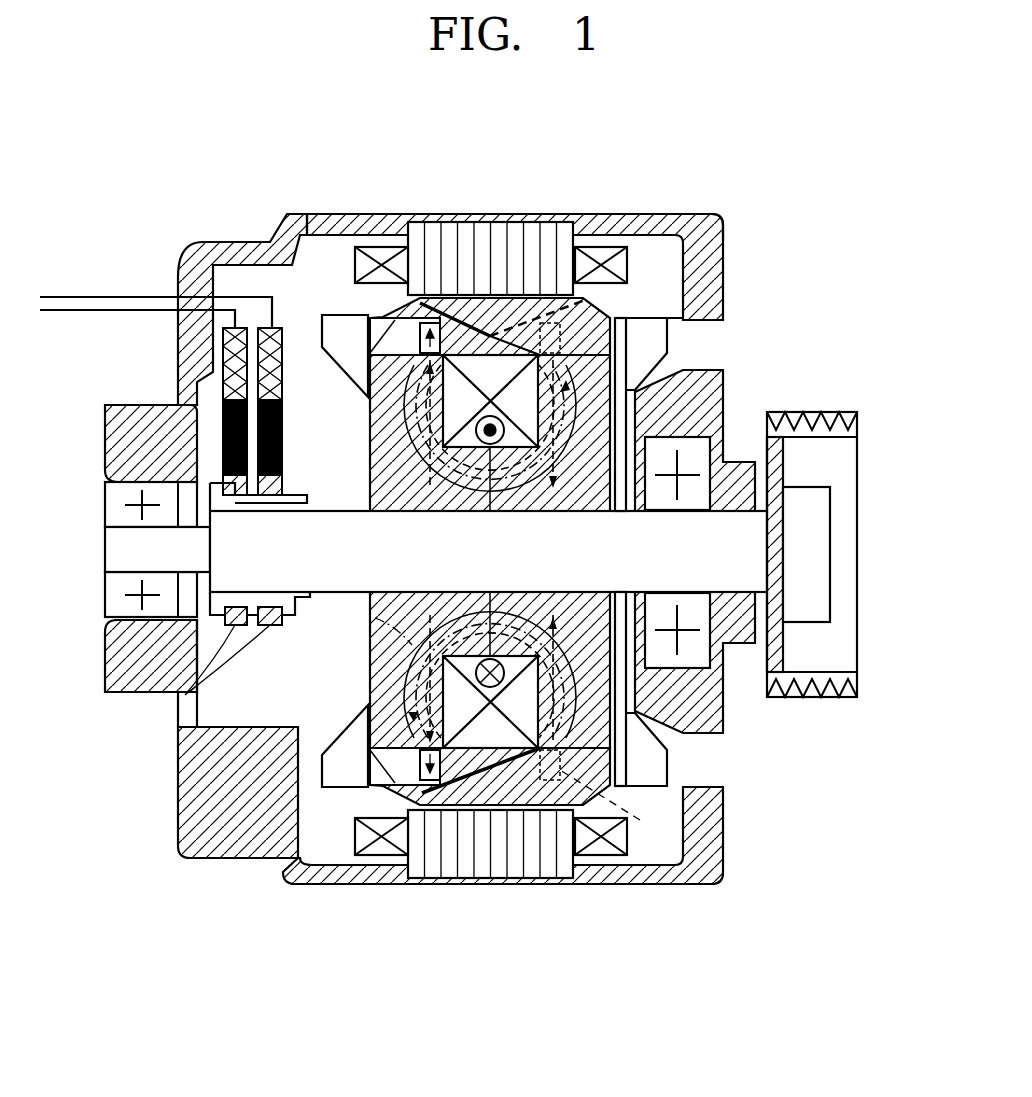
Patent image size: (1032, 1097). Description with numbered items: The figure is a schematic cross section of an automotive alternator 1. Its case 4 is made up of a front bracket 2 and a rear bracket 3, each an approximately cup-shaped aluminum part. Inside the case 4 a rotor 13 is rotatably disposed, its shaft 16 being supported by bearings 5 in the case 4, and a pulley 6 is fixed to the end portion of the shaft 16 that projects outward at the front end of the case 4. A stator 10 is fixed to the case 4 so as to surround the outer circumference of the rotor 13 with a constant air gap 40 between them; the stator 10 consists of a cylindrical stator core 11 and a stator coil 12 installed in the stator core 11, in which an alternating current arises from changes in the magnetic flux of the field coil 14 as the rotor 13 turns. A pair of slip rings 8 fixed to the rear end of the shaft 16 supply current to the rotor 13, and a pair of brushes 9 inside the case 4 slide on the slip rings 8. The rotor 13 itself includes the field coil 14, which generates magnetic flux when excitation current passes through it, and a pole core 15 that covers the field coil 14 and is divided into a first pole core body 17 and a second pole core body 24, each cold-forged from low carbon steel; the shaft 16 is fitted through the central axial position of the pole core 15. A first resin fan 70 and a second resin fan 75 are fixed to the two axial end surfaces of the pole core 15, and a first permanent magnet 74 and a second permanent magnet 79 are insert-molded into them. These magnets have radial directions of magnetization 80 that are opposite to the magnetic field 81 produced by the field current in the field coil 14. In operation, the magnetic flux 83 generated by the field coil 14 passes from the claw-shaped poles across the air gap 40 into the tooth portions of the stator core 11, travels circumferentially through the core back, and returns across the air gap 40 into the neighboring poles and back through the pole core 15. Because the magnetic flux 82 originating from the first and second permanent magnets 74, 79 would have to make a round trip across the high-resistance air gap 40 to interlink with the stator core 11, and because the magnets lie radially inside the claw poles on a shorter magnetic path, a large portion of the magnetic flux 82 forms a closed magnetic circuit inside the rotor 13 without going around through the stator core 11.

The automotive alternator 1 is at (161, 110).
The front bracket 2 is at (718, 252).
The rear bracket 3 is at (205, 250).
The case 4 is at (716, 216).
The bearings 5 is at (108, 488).
The pulley 6 is at (805, 412).
The slip rings 8 is at (185, 695).
The brushes 9 is at (235, 400).
The stator 10 is at (555, 168).
The stator core 11 is at (492, 262).
The stator coil 12 is at (600, 262).
The rotor 13 is at (700, 174).
The field coil 14 is at (485, 735).
The pole core 15 is at (605, 663).
The shaft 16 is at (752, 548).
The first pole core body 17 is at (615, 722).
The second pole core body 24 is at (362, 712).
The air gap 40 is at (400, 315).
The first resin fan 70 is at (665, 318).
The first permanent magnet 74 is at (640, 820).
The second resin fan 75 is at (330, 315).
The second permanent magnet 79 is at (420, 762).
The directions of magnetization 80 is at (415, 328).
The magnetic field 81 is at (400, 648).
The magnetic flux 82 is at (430, 690).
The magnetic flux 83 is at (375, 618).